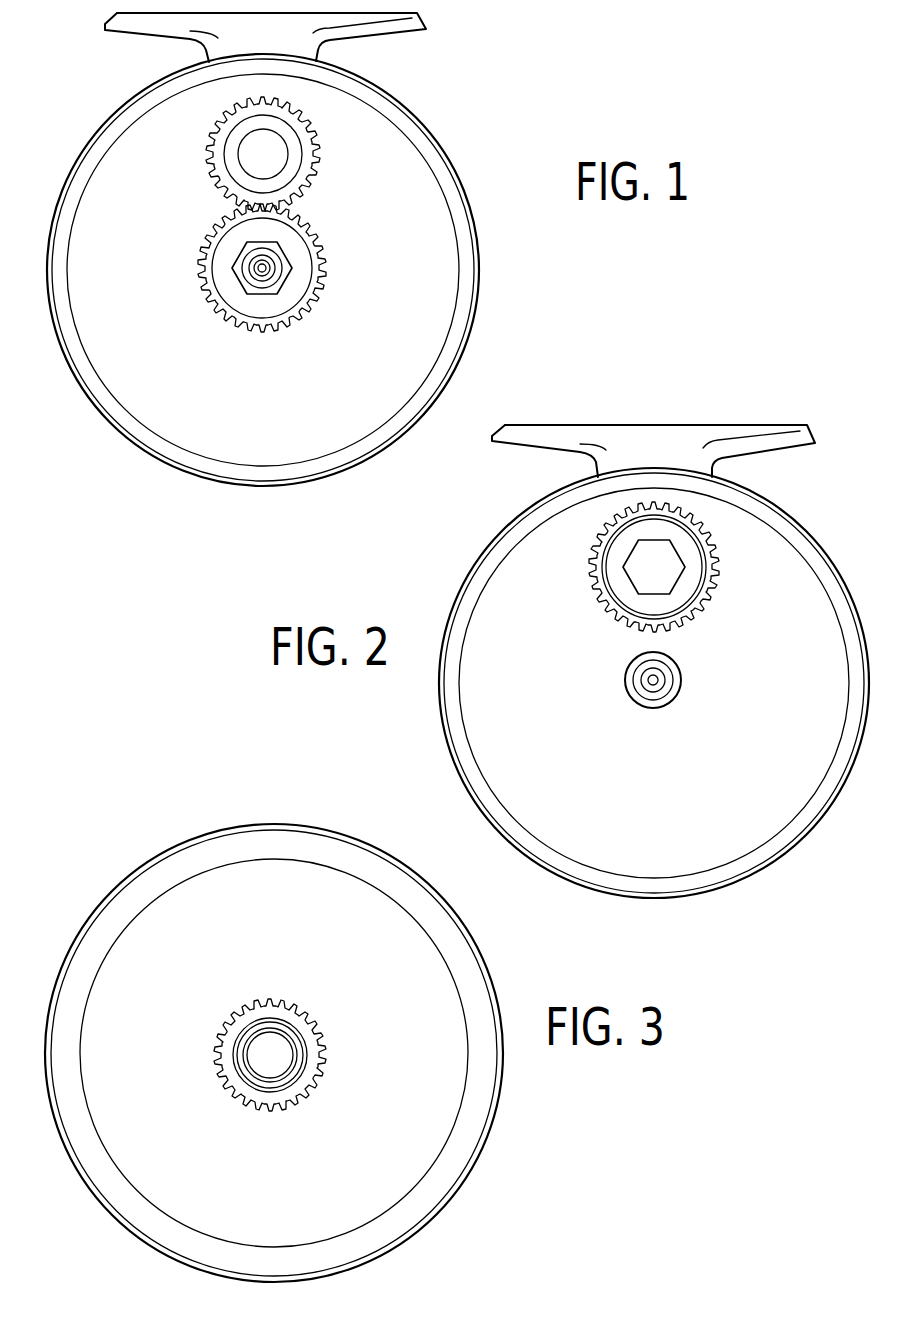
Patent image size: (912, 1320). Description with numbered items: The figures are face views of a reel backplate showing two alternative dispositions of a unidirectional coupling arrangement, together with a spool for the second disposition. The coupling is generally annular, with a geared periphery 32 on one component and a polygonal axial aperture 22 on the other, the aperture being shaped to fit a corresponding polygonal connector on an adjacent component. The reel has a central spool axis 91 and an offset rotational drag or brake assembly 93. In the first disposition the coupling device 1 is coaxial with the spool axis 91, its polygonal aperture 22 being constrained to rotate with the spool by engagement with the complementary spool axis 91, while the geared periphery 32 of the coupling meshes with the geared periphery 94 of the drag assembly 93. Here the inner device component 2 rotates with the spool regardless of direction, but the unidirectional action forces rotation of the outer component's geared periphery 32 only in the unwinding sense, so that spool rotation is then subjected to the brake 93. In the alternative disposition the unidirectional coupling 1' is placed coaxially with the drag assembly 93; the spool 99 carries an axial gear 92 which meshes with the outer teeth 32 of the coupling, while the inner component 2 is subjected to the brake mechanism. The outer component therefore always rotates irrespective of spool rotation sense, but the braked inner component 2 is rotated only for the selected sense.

In FIG. 1, the coupling device 1 is at (263, 249).
In FIG. 2, the unidirectional coupling 1' is at (654, 661).
In FIG. 1, the inner device component 2 is at (292, 308).
In FIG. 2, the inner device component 2 is at (610, 572).
In FIG. 1, the polygonal axial aperture 22 is at (277, 293).
In FIG. 1, the geared periphery 32 is at (323, 290).
In FIG. 2, the geared periphery 32 is at (713, 598).
In FIG. 1, the central spool axis 91 is at (262, 275).
In FIG. 2, the central spool axis 91 is at (630, 700).
In FIG. 3, the axial gear 92 is at (248, 1007).
In FIG. 1, the drag assembly 93 is at (366, 147).
In FIG. 2, the drag assembly 93 is at (668, 567).
In FIG. 1, the geared periphery of the drag assembly 94 is at (312, 183).
In FIG. 3, the spool 99 is at (287, 962).